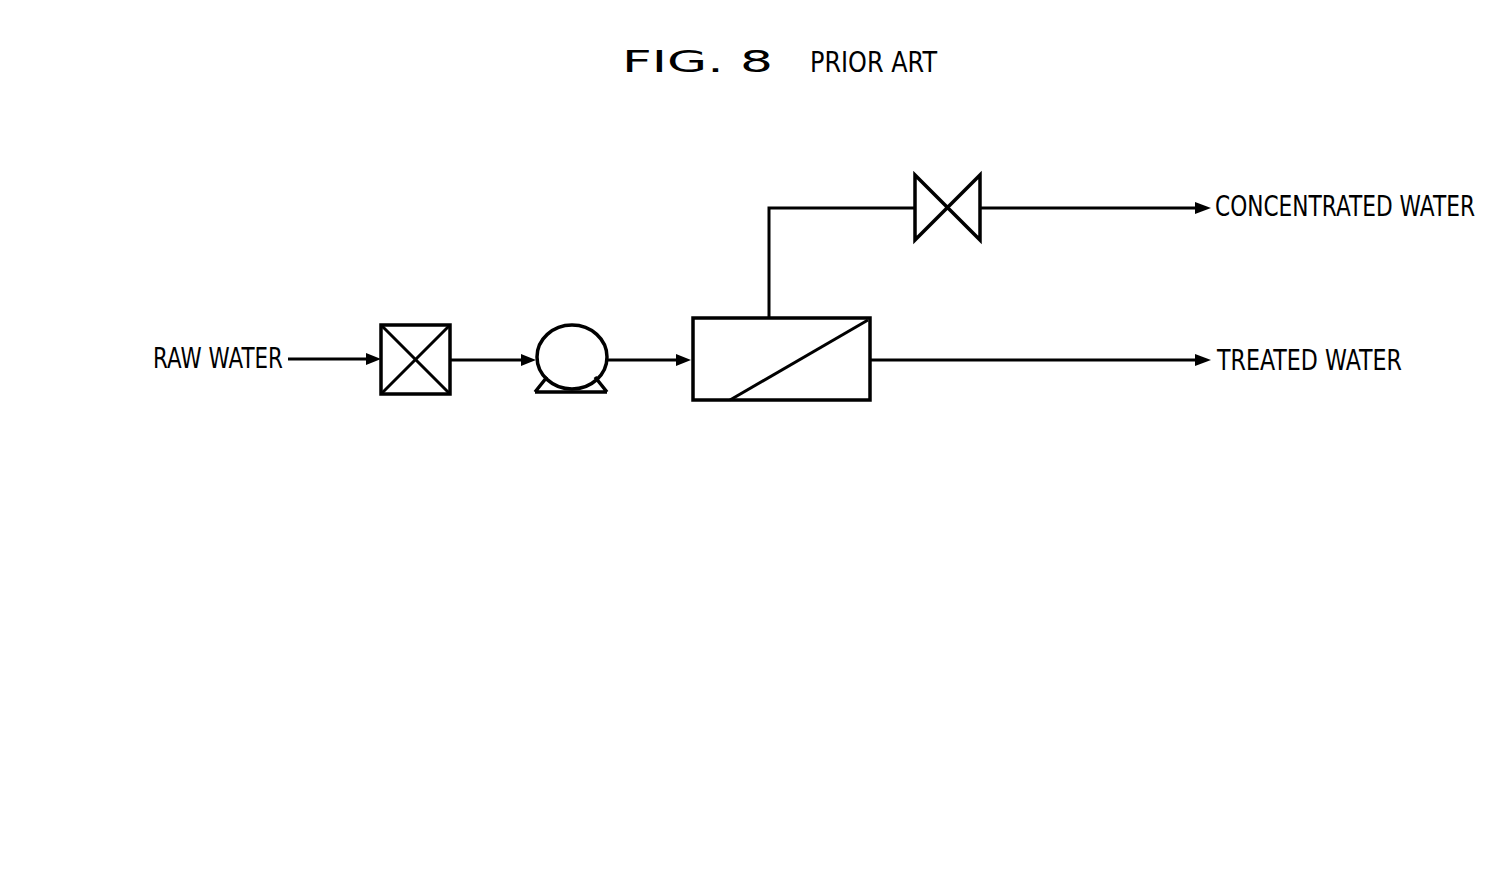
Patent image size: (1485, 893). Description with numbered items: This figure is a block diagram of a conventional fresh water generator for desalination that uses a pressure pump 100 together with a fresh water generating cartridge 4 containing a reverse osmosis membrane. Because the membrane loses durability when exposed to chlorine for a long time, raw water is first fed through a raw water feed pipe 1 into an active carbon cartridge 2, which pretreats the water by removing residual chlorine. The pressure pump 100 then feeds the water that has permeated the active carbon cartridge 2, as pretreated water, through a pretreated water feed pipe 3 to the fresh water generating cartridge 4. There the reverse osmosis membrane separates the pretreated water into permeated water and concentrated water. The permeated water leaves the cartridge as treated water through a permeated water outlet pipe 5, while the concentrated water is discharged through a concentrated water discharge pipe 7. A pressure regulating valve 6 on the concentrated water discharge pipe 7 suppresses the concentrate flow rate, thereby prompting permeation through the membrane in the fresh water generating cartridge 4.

The raw water feed pipe 1 is at (327, 357).
The active carbon cartridge 2 is at (407, 395).
The pretreated water feed pipe 3 is at (484, 358).
The pressure pump 100 is at (559, 396).
The fresh water generating cartridge 4 is at (757, 402).
The permeated water outlet pipe 5 is at (1020, 362).
The pressure regulating valve 6 is at (928, 212).
The concentrated water discharge pipe 7 is at (1117, 212).